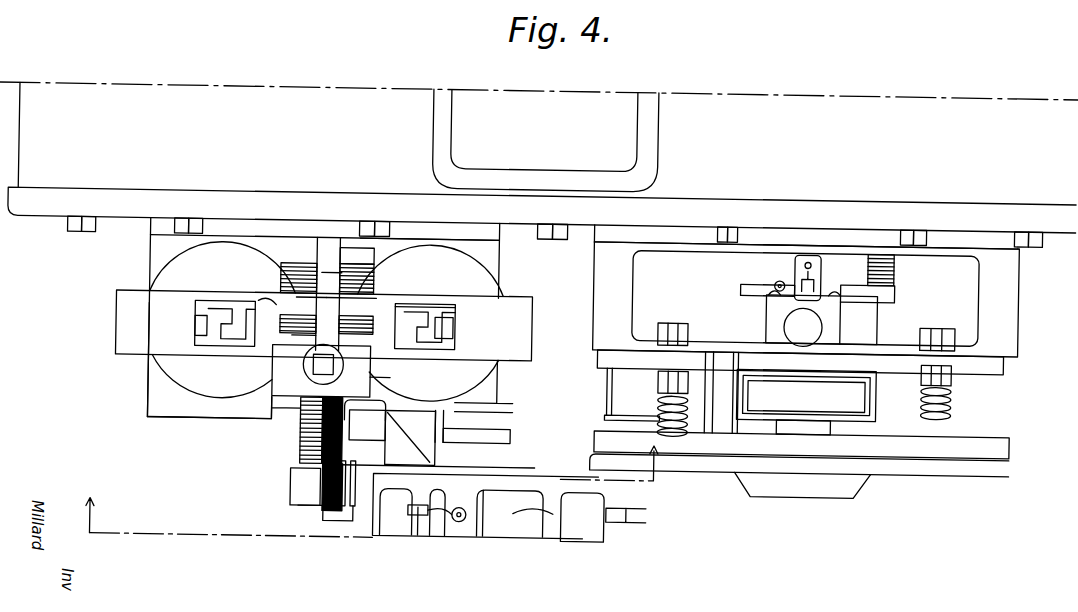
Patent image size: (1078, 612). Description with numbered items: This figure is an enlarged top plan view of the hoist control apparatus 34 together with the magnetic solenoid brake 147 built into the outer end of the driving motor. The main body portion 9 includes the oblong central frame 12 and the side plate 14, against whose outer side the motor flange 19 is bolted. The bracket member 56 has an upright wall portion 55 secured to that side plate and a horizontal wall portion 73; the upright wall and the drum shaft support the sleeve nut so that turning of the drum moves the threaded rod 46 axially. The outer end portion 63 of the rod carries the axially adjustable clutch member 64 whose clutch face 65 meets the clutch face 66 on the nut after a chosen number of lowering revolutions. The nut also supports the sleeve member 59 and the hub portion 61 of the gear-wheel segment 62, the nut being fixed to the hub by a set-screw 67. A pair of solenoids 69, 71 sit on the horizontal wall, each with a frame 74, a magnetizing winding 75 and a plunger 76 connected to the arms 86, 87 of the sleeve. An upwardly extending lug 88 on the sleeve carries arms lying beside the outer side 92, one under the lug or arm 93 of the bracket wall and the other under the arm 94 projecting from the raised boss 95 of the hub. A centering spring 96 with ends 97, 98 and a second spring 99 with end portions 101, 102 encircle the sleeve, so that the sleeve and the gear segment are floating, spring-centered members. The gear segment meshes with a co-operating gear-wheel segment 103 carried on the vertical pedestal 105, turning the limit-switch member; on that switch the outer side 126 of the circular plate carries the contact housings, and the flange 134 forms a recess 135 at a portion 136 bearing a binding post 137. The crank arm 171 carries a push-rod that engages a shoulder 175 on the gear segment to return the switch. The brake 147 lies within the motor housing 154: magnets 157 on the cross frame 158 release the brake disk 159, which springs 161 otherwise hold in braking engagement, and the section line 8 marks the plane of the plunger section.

The section line 8 is at (366, 499).
The main body portion 9 is at (539, 143).
The central frame 12 is at (542, 196).
The side plate 14 is at (522, 329).
The flange 19 is at (992, 234).
The apparatus 34 is at (363, 321).
The threaded rod 46 is at (306, 445).
The upright wall portion 55 is at (440, 225).
The bracket member 56 is at (172, 399).
The sleeve member 59 is at (348, 257).
The hub portion 61 is at (292, 372).
The gear-wheel segment 62 is at (505, 384).
The outer end portion 63 is at (314, 517).
The clutch member 64 is at (315, 483).
The clutch face 65 is at (299, 462).
The clutch face 66 is at (295, 397).
The set-screw 67 is at (340, 356).
The solenoid 69 is at (163, 264).
The solenoid 71 is at (503, 282).
The horizontal wall portion 73 is at (181, 417).
The frame 74 is at (127, 331).
The magnetizing winding 75 is at (170, 365).
The plunger 76 is at (196, 324).
The arm 86 is at (260, 296).
The arm 87 is at (399, 300).
The lug 88 is at (317, 295).
The outer side 92 is at (296, 332).
The lug or arm 93 is at (350, 266).
The arm 94 is at (396, 320).
The raised boss 95 is at (375, 371).
The centering spring 96 is at (285, 262).
The end of spring 97 is at (285, 285).
The end of spring 98 is at (383, 261).
The spring 99 is at (214, 315).
The end portion 101 is at (314, 330).
The end portion 102 is at (351, 305).
The gear-wheel segment 103 is at (476, 414).
The vertical pedestal 105 is at (516, 455).
The outer side 126 is at (477, 520).
The flange 134 is at (502, 481).
The recess 135 is at (405, 501).
The portion of flange 136 is at (422, 485).
The binding post 137 is at (428, 526).
The solenoid brake 147 is at (807, 397).
The housing 154 is at (1006, 295).
The magnets 157 is at (632, 395).
The cross frame 158 is at (887, 338).
The brake disk 159 is at (906, 447).
The springs 161 is at (665, 387).
The crank arm 171 is at (360, 429).
The shoulder 175 is at (410, 437).